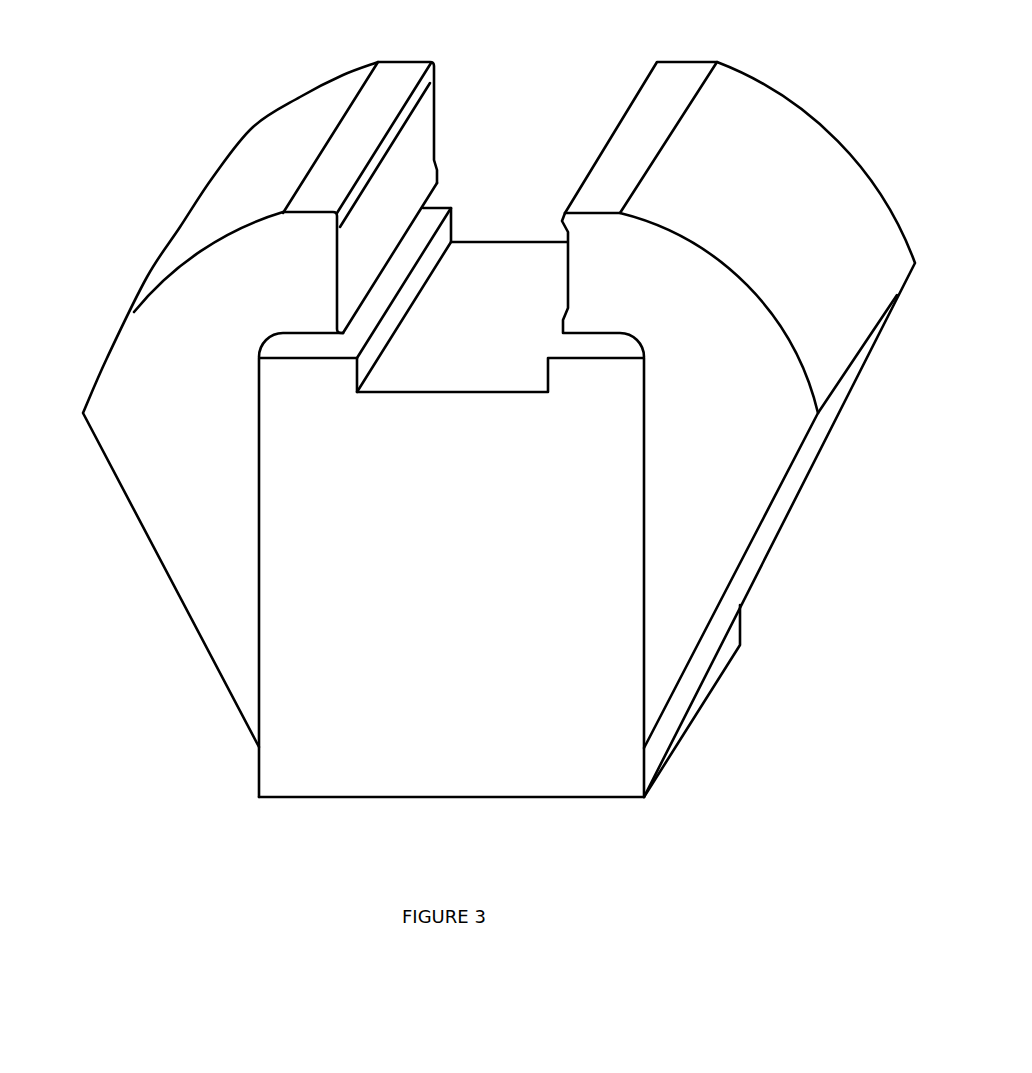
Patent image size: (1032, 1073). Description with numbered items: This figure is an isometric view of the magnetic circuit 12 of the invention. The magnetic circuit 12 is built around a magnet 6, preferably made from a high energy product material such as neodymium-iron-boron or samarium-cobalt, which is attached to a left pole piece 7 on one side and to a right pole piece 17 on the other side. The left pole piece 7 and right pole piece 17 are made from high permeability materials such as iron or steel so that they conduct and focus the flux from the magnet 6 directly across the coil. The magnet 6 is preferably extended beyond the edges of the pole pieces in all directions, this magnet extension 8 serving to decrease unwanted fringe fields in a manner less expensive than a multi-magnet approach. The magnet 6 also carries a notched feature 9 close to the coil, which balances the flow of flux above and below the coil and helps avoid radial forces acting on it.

The magnetic circuit 12 is at (75, 100).
The left pole piece 7 is at (270, 145).
The right pole piece 17 is at (793, 155).
The magnet extension 8 is at (255, 773).
The notched feature 9 is at (455, 218).
The magnet 6 is at (433, 798).